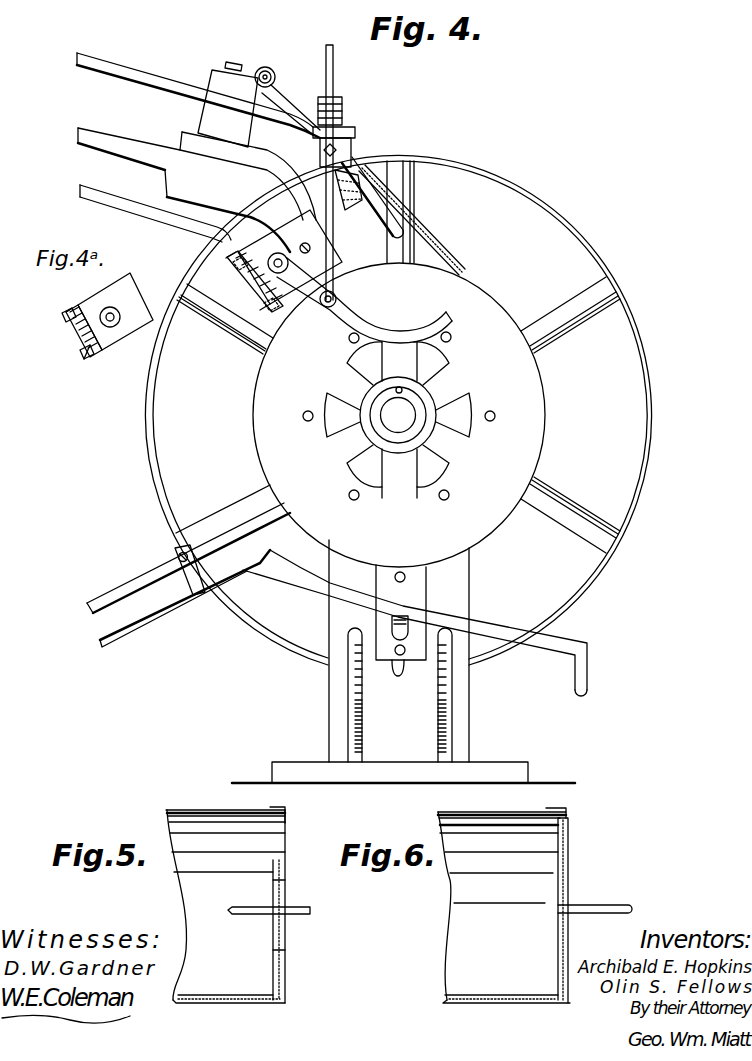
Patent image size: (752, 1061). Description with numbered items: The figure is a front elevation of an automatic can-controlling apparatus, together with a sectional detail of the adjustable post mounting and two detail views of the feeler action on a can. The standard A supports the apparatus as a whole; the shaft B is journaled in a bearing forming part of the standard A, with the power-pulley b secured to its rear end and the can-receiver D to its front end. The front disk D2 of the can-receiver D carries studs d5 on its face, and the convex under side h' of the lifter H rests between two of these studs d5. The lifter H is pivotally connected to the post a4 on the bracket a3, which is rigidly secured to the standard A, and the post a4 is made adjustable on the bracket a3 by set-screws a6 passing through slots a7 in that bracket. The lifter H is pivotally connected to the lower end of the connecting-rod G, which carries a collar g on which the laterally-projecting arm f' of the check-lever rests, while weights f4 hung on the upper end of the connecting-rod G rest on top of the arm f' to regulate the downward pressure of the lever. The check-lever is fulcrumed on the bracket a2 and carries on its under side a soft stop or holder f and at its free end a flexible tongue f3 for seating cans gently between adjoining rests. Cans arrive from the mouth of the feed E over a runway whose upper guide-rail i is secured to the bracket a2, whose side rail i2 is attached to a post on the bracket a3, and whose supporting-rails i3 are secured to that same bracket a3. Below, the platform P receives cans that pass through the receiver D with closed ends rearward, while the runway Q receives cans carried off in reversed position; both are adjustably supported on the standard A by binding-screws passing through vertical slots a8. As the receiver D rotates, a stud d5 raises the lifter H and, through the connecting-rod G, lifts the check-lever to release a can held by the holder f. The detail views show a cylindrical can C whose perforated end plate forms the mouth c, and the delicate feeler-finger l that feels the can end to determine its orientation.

In FIG. 4, the power-pulley b is at (409, 410).
In FIG. 4, the can-receiver D is at (560, 468).
In FIG. 4, the disk D2 is at (445, 536).
In FIG. 4, the studs d5 is at (344, 347).
In FIG. 4, the shaft B is at (398, 415).
In FIG. 4, the lifter H is at (372, 333).
In FIG. 4, the convex under side of the lifter h' is at (399, 361).
In FIG. 4, the standard A is at (407, 651).
In FIG. 4, the vertical slots a8 is at (402, 680).
In FIG. 4, the platform P is at (415, 623).
In FIG. 4, the runway Q is at (188, 575).
In FIG. 4, the connecting-rod G is at (343, 262).
In FIG. 4, the weights f4 is at (342, 110).
In FIG. 4, the laterally-projecting arm f' is at (341, 132).
In FIG. 4, the collar g is at (320, 156).
In FIG. 4, the link F' is at (287, 101).
In FIG. 4, the stop or holder f is at (348, 197).
In FIG. 4, the feed E is at (388, 234).
In FIG. 4, the flexible tongue f3 is at (412, 220).
In FIG. 4, the upper guide-rail i is at (198, 95).
In FIG. 4, the side rail i2 is at (197, 185).
In FIG. 4, the supporting-rails i3 is at (155, 213).
In FIG. 4, the bracket a2 is at (228, 104).
In FIG. 4, the post a4 is at (290, 257).
In FIG. 4A, the post a4 is at (115, 311).
In FIG. 4, the bracket a3 is at (255, 282).
In FIG. 4A, the bracket a3 is at (76, 332).
In FIG. 4, the set-screws a6 is at (236, 264).
In FIG. 4A, the set-screws a6 is at (60, 322).
In FIG. 4, the slots a7 is at (228, 236).
In FIG. 4A, the slots a7 is at (74, 305).
In FIG. 5, the can C is at (225, 905).
In FIG. 6, the can C is at (504, 905).
In FIG. 5, the feeler-finger l is at (269, 896).
In FIG. 6, the feeler-finger l is at (595, 896).
In FIG. 5, the mouth or filling-aperture c is at (286, 915).